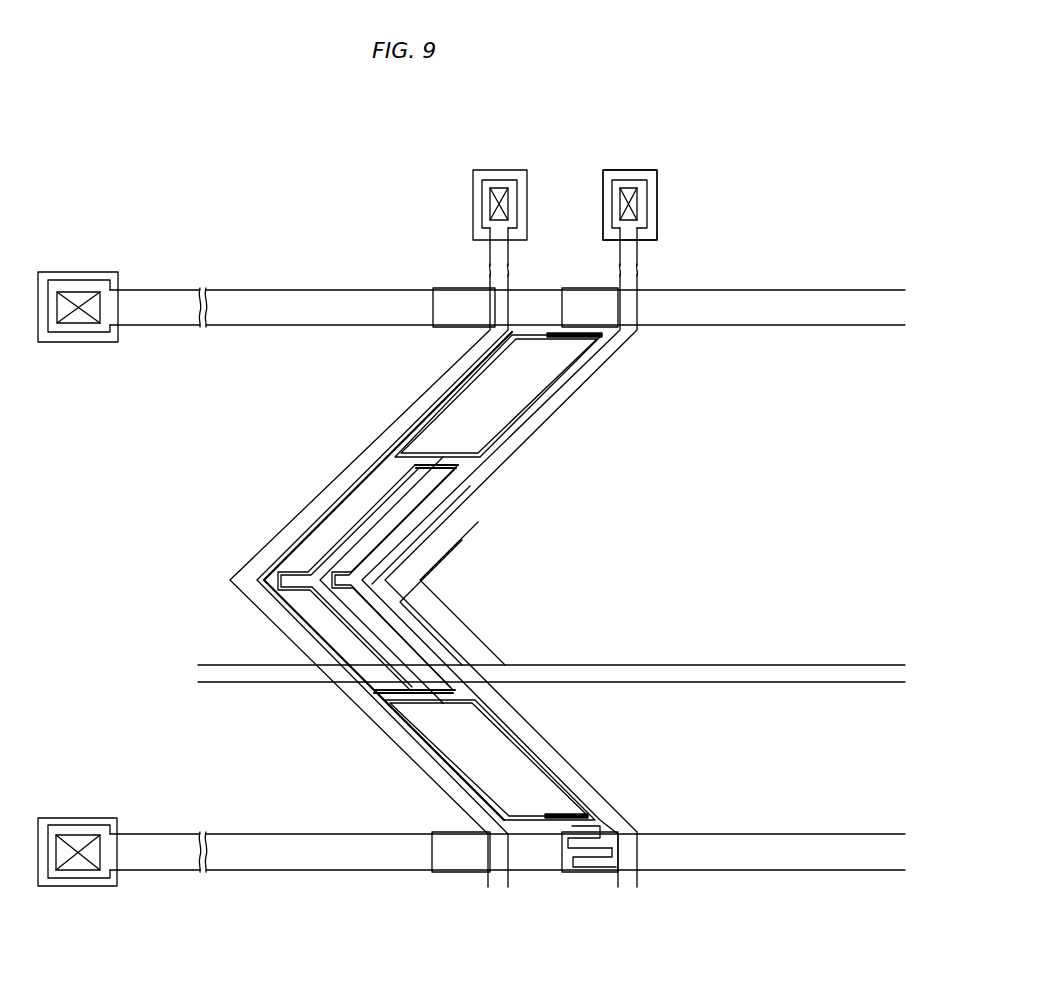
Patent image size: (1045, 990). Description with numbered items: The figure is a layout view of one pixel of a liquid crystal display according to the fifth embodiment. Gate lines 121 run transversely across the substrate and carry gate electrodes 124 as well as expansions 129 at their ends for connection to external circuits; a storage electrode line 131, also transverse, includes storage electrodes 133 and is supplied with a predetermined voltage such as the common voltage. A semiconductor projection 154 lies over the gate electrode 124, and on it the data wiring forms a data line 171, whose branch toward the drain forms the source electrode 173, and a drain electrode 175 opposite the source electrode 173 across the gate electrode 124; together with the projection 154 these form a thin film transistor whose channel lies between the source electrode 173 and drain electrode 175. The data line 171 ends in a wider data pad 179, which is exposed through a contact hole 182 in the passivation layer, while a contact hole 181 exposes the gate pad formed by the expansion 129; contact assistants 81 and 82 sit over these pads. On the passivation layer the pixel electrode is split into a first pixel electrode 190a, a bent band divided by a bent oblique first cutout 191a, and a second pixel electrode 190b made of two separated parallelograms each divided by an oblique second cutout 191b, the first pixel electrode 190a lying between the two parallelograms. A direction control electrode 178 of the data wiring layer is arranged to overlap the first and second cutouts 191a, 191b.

The contact assistant 81 is at (70, 818).
The contact assistant 82 is at (657, 228).
The gate line 121 is at (410, 873).
The gate electrode 124 is at (566, 872).
The expansion (gate pad) 129 is at (103, 823).
The storage electrode line 131 is at (705, 684).
The storage electrode 133 is at (425, 665).
The projection 154 is at (556, 858).
The data line 171 is at (421, 662).
The source electrode 173 is at (640, 868).
The drain electrode 175 is at (598, 832).
The direction control electrode 178 is at (400, 505).
The data pad 179 is at (612, 206).
The contact hole 181 is at (88, 874).
The contact hole 182 is at (630, 204).
The first pixel electrode 190a is at (465, 488).
The second pixel electrode 190b is at (565, 380).
The first cutout 191a is at (350, 525).
The second cutout 191b is at (465, 415).